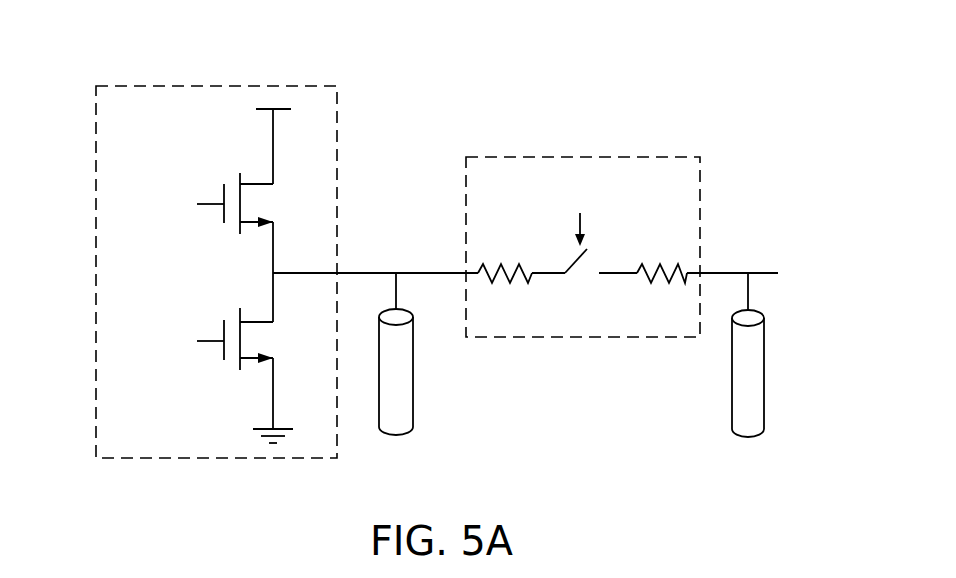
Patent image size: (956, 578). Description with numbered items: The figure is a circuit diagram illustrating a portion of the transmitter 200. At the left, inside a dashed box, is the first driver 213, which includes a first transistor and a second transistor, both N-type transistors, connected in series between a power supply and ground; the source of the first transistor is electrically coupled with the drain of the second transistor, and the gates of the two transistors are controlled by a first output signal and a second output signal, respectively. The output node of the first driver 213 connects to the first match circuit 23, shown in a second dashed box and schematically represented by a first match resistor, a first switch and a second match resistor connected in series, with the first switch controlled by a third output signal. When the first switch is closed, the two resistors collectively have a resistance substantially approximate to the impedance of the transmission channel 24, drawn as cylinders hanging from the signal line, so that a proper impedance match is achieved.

The transmitter 200 is at (88, 40).
The first driver 213 is at (340, 152).
The first match circuit 23 is at (581, 157).
The transmission channel 24 is at (415, 368).